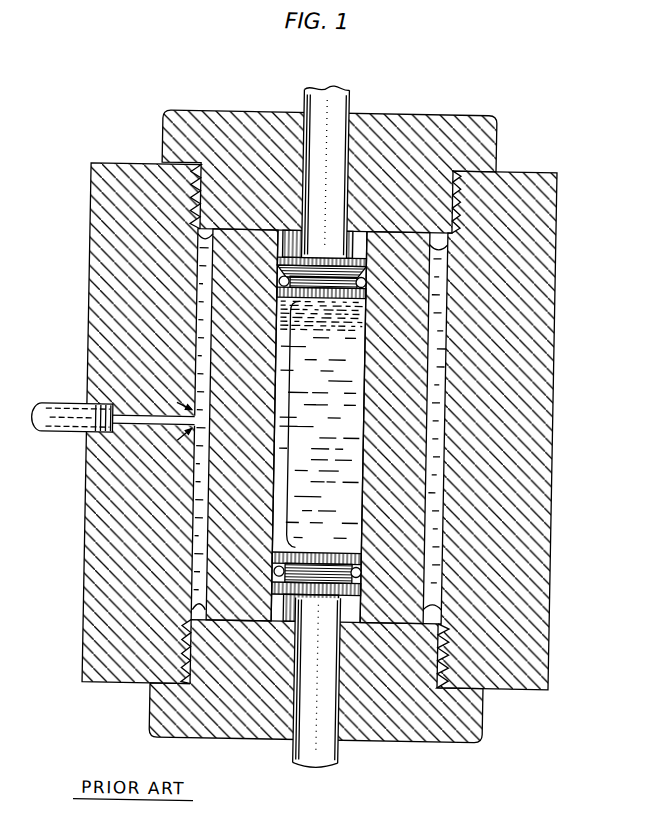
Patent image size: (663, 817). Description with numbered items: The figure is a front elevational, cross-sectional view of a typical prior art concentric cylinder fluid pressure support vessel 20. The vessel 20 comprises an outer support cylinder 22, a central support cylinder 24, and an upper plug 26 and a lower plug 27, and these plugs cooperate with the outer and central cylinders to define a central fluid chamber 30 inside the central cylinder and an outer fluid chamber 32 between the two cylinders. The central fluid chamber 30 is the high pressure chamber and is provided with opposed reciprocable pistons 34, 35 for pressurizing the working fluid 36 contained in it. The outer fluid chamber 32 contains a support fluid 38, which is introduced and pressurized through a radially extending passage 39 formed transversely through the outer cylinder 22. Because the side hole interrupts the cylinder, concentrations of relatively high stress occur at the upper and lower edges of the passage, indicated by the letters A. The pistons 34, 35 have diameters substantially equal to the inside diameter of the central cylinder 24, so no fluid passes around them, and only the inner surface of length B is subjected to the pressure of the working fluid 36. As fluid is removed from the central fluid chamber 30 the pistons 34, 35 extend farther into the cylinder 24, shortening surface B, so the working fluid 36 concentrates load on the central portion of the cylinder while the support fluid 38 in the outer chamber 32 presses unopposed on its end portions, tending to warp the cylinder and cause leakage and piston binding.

The concentric cylinder fluid pressure support vessel 20 is at (538, 136).
The outer support cylinder 22 is at (554, 246).
The central support cylinder 24 is at (384, 487).
The upper plug 26 is at (443, 111).
The lower plug 27 is at (431, 725).
The central fluid chamber 30 is at (322, 388).
The outer fluid chamber 32 is at (434, 526).
The upper reciprocable piston 34 is at (356, 266).
The lower reciprocable piston 35 is at (304, 553).
The working fluid 36 is at (351, 443).
The support fluid 38 is at (199, 515).
The radially extending passage 39 is at (127, 426).